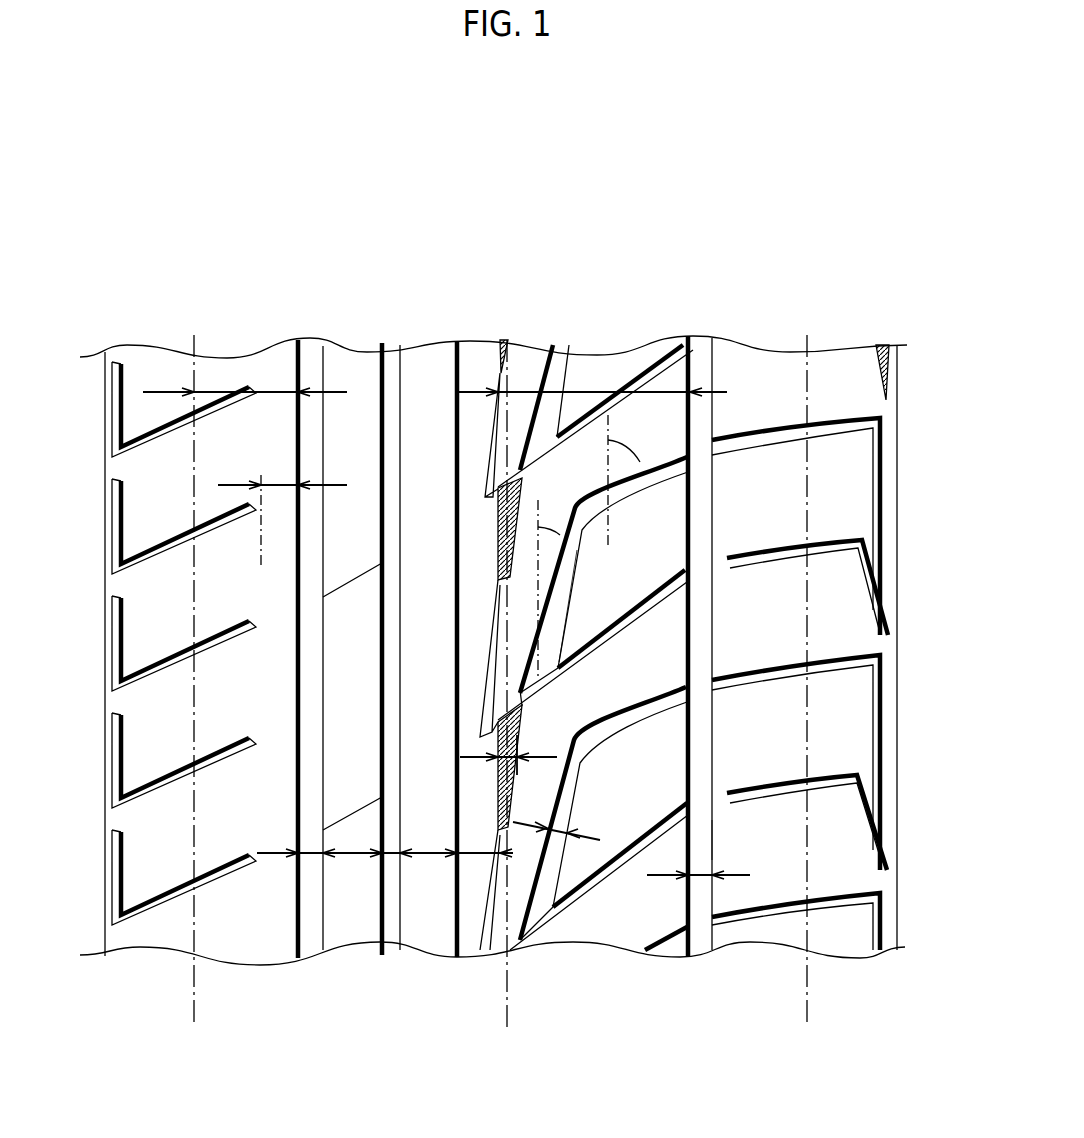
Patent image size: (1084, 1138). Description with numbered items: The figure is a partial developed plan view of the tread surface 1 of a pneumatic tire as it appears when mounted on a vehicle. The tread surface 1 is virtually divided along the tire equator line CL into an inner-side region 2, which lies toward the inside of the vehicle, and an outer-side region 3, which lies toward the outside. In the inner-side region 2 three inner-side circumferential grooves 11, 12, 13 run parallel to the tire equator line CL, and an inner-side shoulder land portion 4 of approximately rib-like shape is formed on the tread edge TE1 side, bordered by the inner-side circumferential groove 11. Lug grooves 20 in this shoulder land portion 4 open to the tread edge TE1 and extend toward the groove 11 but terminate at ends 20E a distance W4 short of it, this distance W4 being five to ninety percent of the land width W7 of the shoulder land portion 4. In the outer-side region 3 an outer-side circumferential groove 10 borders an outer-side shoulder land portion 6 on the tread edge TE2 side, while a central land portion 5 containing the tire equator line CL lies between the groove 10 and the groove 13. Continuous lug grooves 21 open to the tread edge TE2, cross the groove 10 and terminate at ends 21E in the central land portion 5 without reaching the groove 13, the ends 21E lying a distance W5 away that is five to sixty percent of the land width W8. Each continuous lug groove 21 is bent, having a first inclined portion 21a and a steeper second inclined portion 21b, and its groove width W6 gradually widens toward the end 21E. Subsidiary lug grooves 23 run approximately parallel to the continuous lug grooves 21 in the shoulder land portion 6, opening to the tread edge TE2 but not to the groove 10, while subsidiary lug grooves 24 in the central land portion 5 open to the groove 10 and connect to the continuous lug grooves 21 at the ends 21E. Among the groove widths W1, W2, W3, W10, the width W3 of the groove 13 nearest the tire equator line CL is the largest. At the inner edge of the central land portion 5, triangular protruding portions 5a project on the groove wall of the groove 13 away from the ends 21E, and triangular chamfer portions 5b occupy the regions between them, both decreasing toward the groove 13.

The tread surface 1 is at (836, 306).
The inner-side region 2 is at (503, 970).
The outer-side region 3 is at (807, 970).
The inner-side shoulder land portion 4 is at (298, 322).
The central land portion 5 is at (688, 318).
The outer-side shoulder land portion 6 is at (807, 326).
The outer-side circumferential groove 10 is at (700, 360).
The inner-side circumferential groove 11 is at (310, 365).
The inner-side circumferential groove 12 is at (392, 362).
The inner-side circumferential groove 13 is at (474, 363).
The lug grooves 20 is at (220, 513).
The ends 20E is at (268, 517).
The continuous lug grooves 21 is at (637, 490).
The first inclined portion 21a is at (745, 440).
The second inclined portion 21b is at (562, 605).
The ends 21E is at (523, 710).
The subsidiary lug grooves 23 is at (770, 783).
The subsidiary lug grooves 24 is at (692, 840).
The protruding portions 5a is at (485, 683).
The chamfer portions 5b is at (496, 523).
The groove width W1 is at (300, 858).
The groove width W2 is at (378, 860).
The groove width W3 is at (455, 860).
The distance W4 is at (282, 484).
The distance W5 is at (462, 757).
The groove width W6 is at (556, 828).
The land width W7 is at (272, 392).
The land width W8 is at (583, 392).
The groove width W10 is at (680, 877).
The tread edge TE1 is at (192, 1018).
The tread edge TE2 is at (807, 1018).
The tire equator line CL is at (507, 1018).